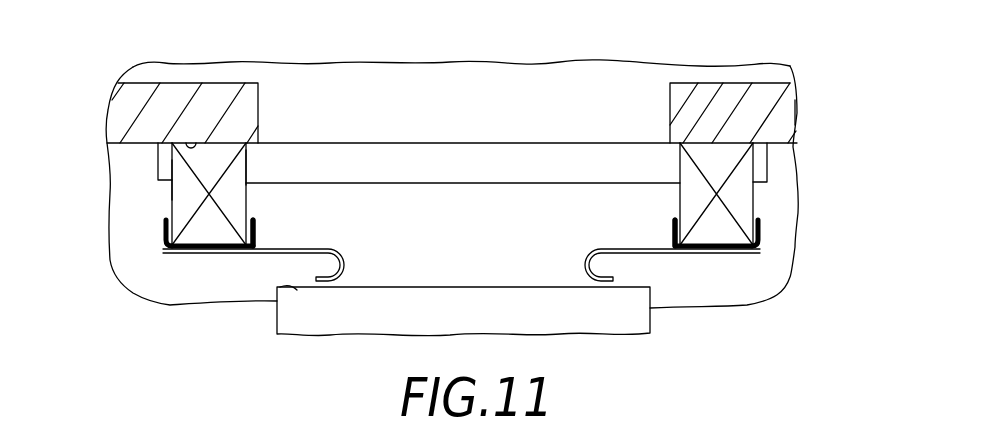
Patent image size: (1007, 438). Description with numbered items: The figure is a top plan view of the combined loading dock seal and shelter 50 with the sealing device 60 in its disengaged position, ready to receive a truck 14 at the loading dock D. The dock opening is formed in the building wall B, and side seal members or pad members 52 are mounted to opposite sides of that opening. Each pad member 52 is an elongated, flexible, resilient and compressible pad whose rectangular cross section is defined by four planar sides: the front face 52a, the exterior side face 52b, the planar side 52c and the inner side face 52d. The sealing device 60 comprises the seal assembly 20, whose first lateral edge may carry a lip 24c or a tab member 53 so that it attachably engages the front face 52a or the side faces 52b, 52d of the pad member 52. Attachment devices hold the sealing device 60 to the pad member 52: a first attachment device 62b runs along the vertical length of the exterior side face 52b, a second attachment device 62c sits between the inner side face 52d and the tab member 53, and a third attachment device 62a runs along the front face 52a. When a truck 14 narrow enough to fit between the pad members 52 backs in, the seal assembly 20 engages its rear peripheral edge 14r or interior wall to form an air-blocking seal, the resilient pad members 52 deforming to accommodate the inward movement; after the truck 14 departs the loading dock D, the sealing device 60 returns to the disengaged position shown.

The truck 14 is at (565, 320).
The rear peripheral edge 14r is at (297, 290).
The seal assembly 20 is at (320, 243).
The lip 24c is at (762, 240).
The combined loading dock seal and shelter 50 is at (551, 52).
The side seal member 52 is at (177, 205).
The front face 52a is at (175, 240).
The exterior side face 52b is at (175, 183).
The planar side 52c is at (192, 140).
The inner side face 52d is at (248, 167).
The tab member 53 is at (257, 233).
The sealing device 60 is at (370, 317).
The third attachment device 62a is at (210, 245).
The first attachment device 62b is at (165, 232).
The second attachment device 62c is at (248, 250).
The building wall B is at (780, 115).
The loading dock D is at (468, 128).